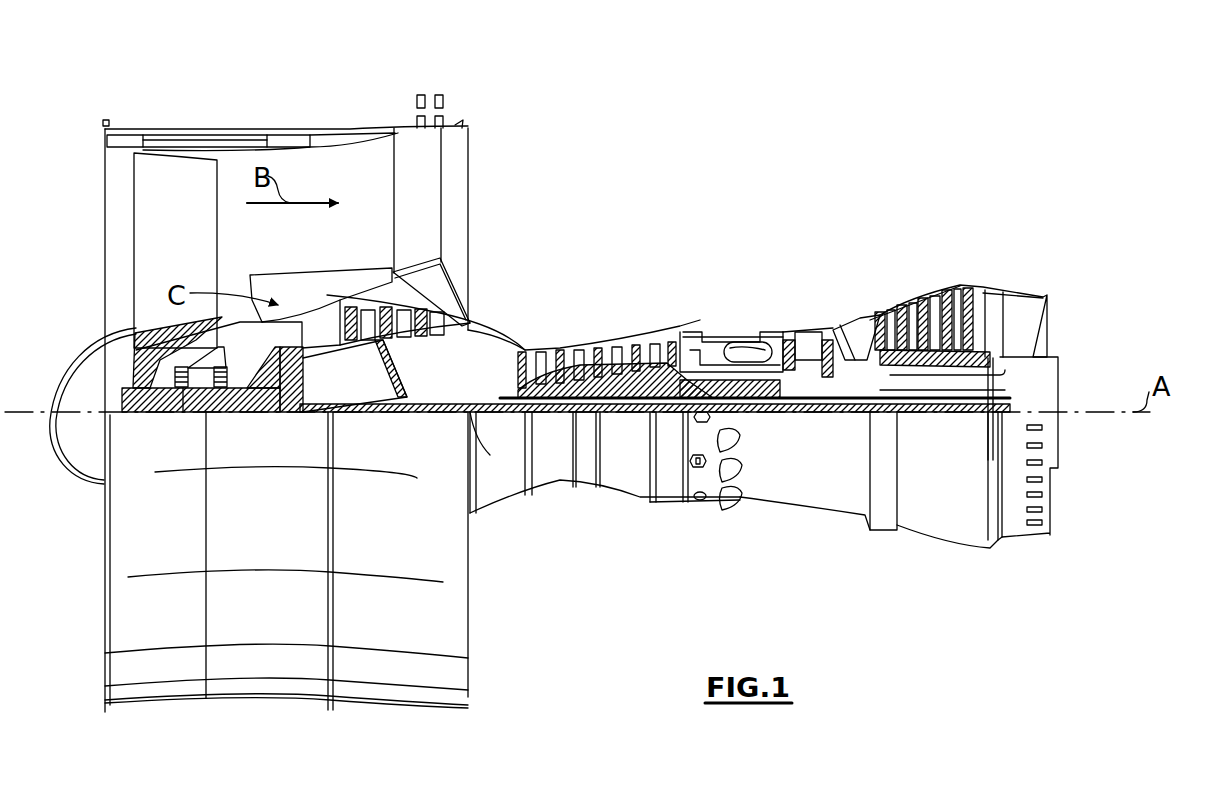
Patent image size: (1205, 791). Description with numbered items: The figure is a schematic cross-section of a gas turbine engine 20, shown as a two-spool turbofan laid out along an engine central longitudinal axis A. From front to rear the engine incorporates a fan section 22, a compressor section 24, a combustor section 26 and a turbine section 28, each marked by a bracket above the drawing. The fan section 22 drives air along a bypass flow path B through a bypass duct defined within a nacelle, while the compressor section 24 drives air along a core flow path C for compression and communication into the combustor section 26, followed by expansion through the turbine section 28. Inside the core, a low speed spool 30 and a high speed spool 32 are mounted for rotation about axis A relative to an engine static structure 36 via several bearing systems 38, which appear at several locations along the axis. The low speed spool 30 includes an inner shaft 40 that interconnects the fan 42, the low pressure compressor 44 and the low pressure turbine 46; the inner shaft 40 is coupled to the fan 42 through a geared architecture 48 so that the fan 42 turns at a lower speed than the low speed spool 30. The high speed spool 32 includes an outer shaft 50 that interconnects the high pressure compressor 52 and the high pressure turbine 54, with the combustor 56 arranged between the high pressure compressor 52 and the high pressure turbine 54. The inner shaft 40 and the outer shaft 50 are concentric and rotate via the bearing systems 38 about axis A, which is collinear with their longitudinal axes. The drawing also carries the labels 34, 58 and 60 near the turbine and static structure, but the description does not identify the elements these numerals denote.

The gas turbine engine 20 is at (752, 178).
The fan section 22 is at (313, 104).
The compressor section 24 is at (325, 247).
The combustor section 26 is at (778, 247).
The turbine section 28 is at (1000, 247).
The low speed spool 30 is at (626, 430).
The high speed spool 32 is at (672, 348).
The engine static structure 34 is at (955, 388).
The engine static structure 36 is at (666, 505).
The bearing systems 38 is at (182, 400).
The inner shaft 40 is at (488, 420).
The fan 42 is at (190, 253).
The low pressure compressor 44 is at (403, 312).
The low pressure turbine 46 is at (935, 290).
The geared architecture 48 is at (295, 398).
The outer shaft 50 is at (748, 404).
The high pressure compressor 52 is at (598, 378).
The high pressure turbine 54 is at (808, 332).
The combustor 56 is at (745, 355).
The mid-turbine frame 58 is at (852, 316).
The airfoils/vanes 60 is at (876, 396).